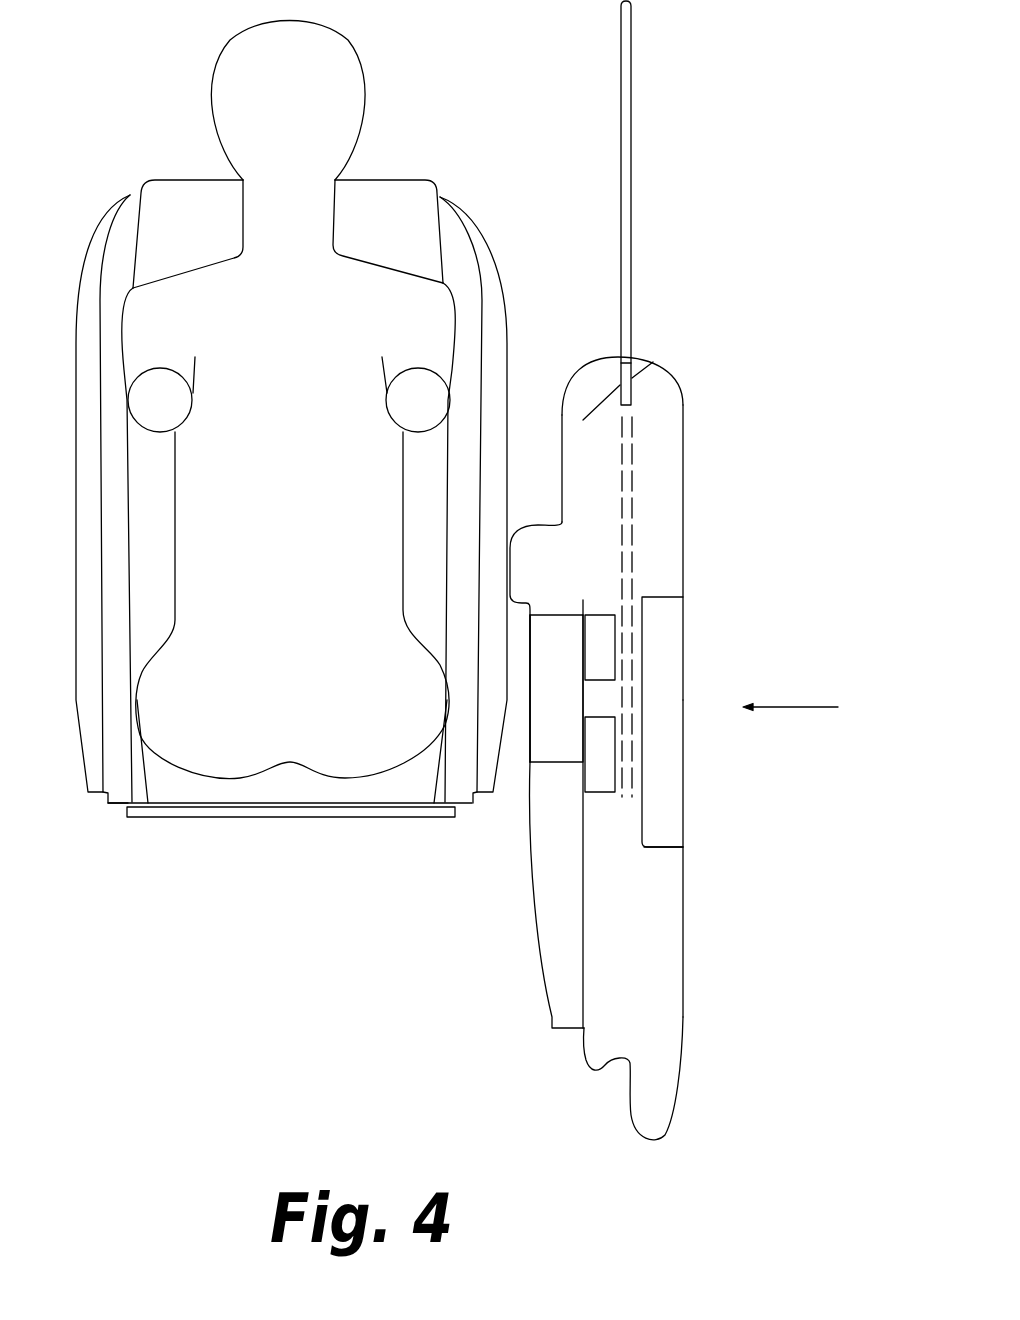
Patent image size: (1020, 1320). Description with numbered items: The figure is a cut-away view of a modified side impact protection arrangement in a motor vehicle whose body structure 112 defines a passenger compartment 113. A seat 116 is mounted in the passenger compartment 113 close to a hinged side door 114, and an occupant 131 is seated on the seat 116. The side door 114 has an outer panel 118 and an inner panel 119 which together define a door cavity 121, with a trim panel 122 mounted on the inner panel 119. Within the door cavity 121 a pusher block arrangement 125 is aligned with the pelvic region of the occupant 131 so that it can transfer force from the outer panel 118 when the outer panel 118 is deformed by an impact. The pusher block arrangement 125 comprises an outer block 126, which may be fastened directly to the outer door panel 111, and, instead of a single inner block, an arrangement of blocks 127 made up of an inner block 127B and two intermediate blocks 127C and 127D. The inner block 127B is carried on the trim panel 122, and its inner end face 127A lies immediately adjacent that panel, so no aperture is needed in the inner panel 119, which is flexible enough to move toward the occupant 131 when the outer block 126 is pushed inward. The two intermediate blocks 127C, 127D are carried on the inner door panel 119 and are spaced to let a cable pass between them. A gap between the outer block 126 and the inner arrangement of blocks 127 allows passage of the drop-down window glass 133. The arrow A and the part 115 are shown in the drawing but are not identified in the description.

The outer door panel 111 is at (683, 188).
The body structure 112 is at (683, 1107).
The passenger compartment 113 is at (565, 198).
The side door 114 is at (690, 385).
The seat back rear surface 115 is at (690, 1016).
The seat 116 is at (85, 770).
The outer panel 118 is at (685, 470).
The inner panel 119 is at (585, 963).
The door cavity 121 is at (653, 1017).
The trim panel 122 is at (580, 366).
The pusher block arrangement 125 is at (657, 853).
The outer block 126 is at (658, 606).
The arrangement of blocks 127 is at (547, 772).
The inner end face 127A is at (530, 750).
The inner block 127B is at (553, 600).
The intermediate block 127C is at (602, 765).
The intermediate block 127D is at (607, 648).
The occupant 131 is at (365, 130).
The window glass 133 is at (633, 277).
The direction A is at (806, 706).